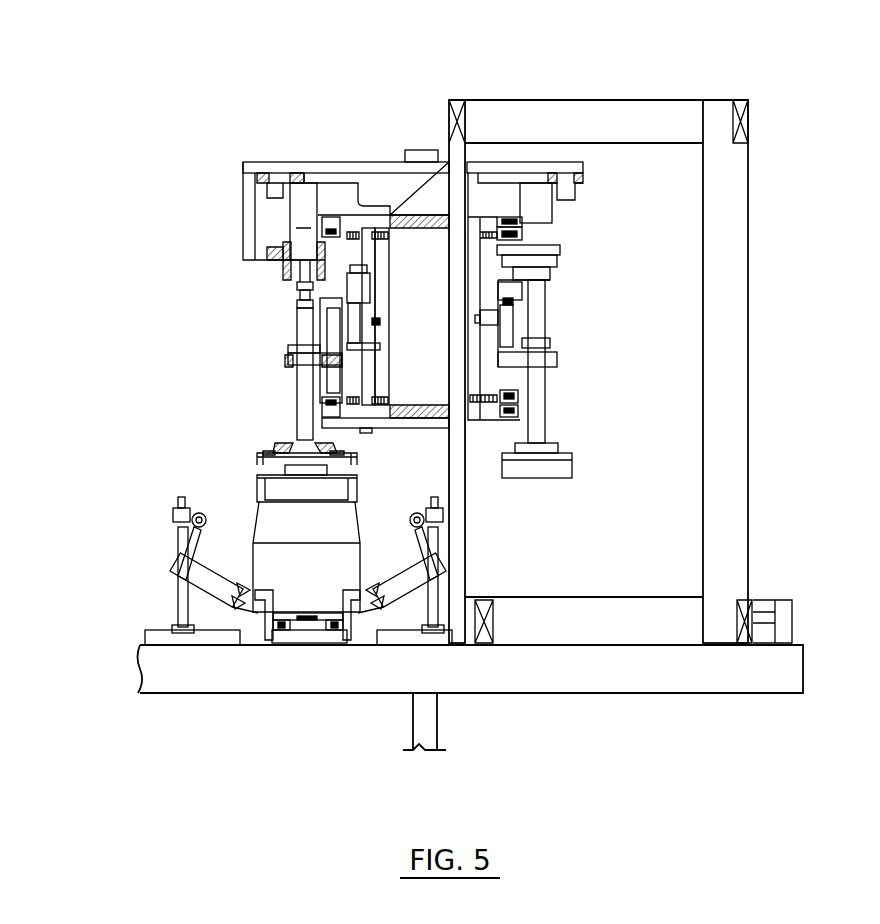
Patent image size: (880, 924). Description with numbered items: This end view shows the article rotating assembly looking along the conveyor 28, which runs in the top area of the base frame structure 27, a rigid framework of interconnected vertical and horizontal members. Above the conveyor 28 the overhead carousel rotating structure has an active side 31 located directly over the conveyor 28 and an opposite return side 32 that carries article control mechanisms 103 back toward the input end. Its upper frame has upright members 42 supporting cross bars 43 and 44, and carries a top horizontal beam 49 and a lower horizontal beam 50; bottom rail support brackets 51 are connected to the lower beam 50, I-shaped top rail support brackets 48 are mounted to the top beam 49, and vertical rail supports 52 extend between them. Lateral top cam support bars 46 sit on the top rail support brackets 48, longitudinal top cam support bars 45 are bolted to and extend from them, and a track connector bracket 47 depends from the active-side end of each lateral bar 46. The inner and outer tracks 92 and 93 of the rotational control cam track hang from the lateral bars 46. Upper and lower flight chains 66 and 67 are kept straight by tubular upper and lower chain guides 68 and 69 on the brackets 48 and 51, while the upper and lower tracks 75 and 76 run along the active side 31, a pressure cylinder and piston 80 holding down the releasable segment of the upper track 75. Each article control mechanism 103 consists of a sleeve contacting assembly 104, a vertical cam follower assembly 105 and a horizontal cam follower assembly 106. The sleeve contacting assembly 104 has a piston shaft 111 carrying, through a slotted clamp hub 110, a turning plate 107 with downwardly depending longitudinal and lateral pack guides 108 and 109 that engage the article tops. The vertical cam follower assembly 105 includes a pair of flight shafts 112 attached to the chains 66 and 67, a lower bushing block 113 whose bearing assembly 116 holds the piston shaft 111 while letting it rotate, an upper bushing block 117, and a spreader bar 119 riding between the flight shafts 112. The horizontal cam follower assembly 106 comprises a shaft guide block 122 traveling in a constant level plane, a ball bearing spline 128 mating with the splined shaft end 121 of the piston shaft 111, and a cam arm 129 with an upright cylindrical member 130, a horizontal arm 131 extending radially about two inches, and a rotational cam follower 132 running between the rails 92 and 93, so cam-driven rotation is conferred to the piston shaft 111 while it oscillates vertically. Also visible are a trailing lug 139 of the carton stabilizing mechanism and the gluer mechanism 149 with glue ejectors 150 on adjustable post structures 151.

The base frame structure 27 is at (610, 690).
The conveyor 28 is at (276, 648).
The active side 31 is at (245, 150).
The return side 32 is at (510, 85).
The upright member 42 is at (466, 505).
The cross bar 43 is at (456, 100).
The cross bar 44 is at (560, 100).
The longitudinal top cam support bar 45 is at (418, 150).
The lateral top cam support bar 46 is at (367, 164).
The track connector bracket 47 is at (243, 200).
The top rail support bracket 48 is at (378, 203).
The top horizontal beam 49 is at (422, 228).
The lower horizontal beam 50 is at (428, 405).
The bottom rail support bracket 51 is at (422, 428).
The vertical rail support 52 is at (368, 305).
The upper flight chain 66 is at (522, 222).
The lower flight chain 67 is at (520, 392).
The upper chain guide 68 is at (522, 233).
The lower chain guide 69 is at (520, 412).
The upper track 75 is at (382, 322).
The lower track 76 is at (378, 345).
The pressure cylinder and piston 80 is at (365, 290).
The inner track 92 is at (298, 175).
The outer track 93 is at (258, 178).
The article control mechanism 103 is at (158, 388).
The sleeve contacting assembly 104 is at (200, 447).
The vertical cam follower assembly 105 is at (190, 337).
The horizontal cam follower assembly 106 is at (250, 250).
The turning plate 107 is at (350, 470).
The longitudinal pack guide 108 is at (306, 497).
The lateral pack guide 109 is at (358, 490).
The slotted clamp hub 110 is at (288, 455).
The piston shaft 111 is at (303, 408).
The flight shaft 112 is at (510, 344).
The lower bushing block 113 is at (285, 358).
The bearing assembly 116 is at (290, 343).
The upper bushing block 117 is at (510, 290).
The spreader bar 119 is at (530, 330).
The splined shaft end 121 is at (300, 285).
The shaft guide block 122 is at (286, 268).
The ball bearing spline 128 is at (300, 245).
The cam arm 129 is at (642, 230).
The upright cylindrical member 130 is at (536, 203).
The horizontal arm 131 is at (555, 172).
The rotational cam follower 132 is at (565, 182).
The trailing lug 139 is at (262, 620).
The gluer mechanism 149 is at (140, 613).
The glue ejector 150 is at (245, 575).
The adjustable post structure 151 is at (173, 520).